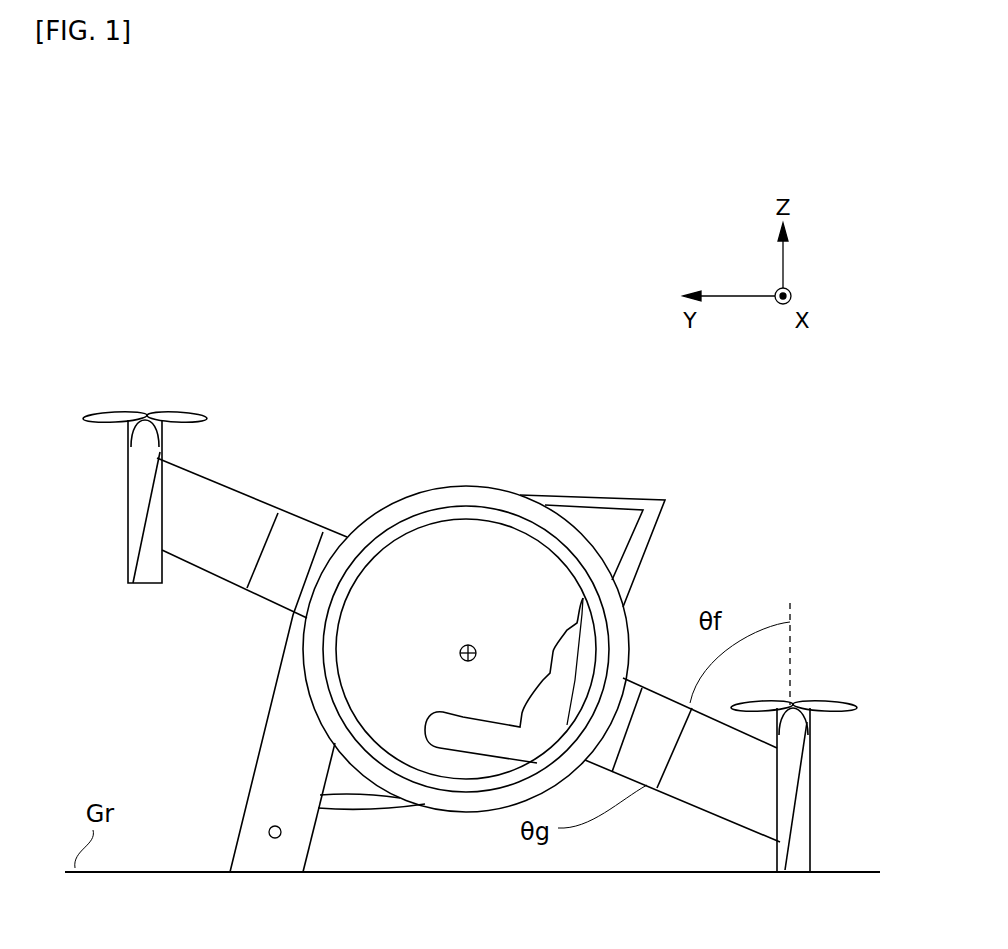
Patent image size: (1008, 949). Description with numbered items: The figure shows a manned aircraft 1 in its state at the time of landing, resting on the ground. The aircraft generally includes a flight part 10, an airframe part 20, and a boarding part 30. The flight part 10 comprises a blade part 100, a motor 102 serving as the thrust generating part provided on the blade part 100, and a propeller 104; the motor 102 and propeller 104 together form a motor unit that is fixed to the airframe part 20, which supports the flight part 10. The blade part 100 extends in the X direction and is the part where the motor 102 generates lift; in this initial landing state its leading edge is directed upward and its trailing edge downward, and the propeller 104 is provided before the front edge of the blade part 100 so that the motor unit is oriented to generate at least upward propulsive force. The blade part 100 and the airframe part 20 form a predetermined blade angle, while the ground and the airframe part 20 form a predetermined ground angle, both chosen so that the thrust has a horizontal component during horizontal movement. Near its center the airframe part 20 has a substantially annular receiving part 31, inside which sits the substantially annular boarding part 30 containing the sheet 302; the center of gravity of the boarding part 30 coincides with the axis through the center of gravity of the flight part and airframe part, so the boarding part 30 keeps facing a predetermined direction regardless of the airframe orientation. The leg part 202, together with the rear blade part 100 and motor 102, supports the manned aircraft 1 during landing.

The manned aircraft 1 is at (590, 340).
The flight part 10 is at (147, 382).
The airframe part 20 is at (255, 500).
The boarding part 30 is at (490, 530).
The receiving part 31 is at (410, 517).
The blade part 100 is at (138, 590).
The motor 102 is at (165, 590).
The propeller 104 is at (83, 422).
The leg part 202 is at (250, 795).
The sheet 302 is at (567, 623).